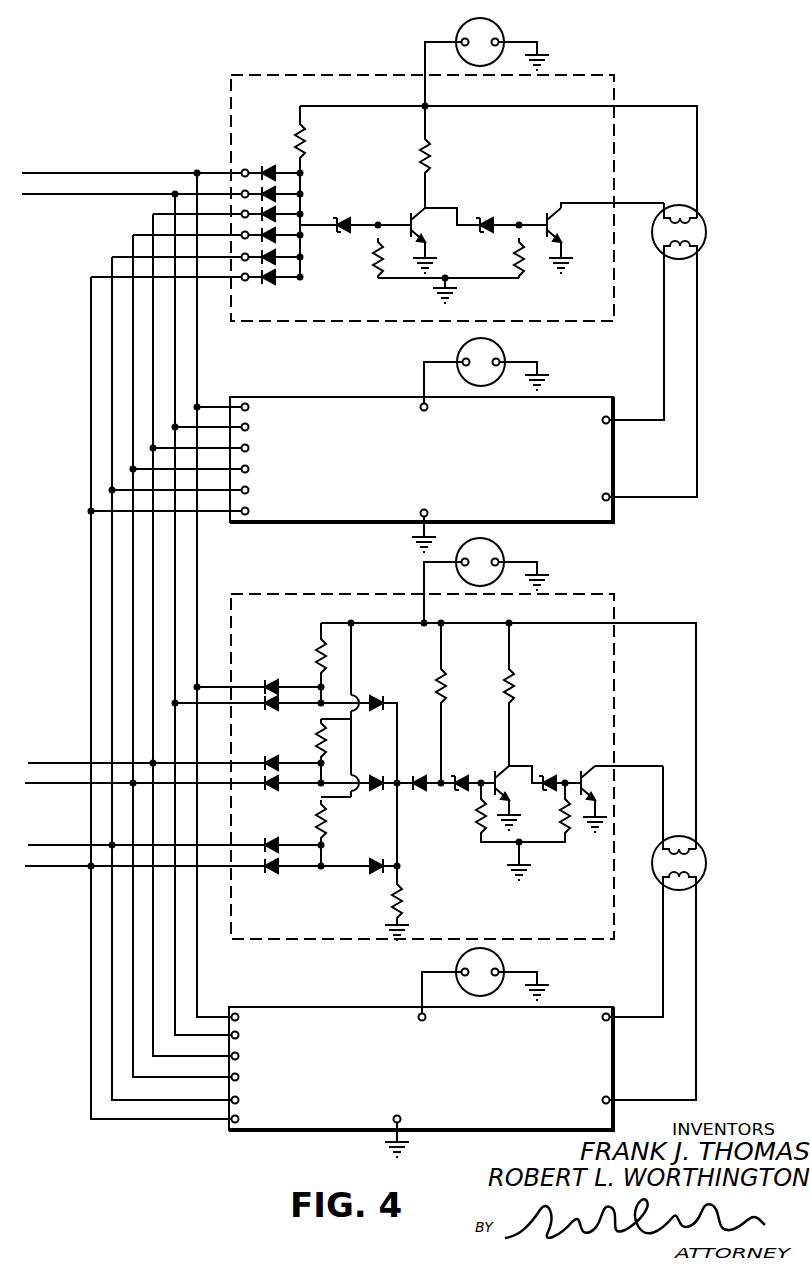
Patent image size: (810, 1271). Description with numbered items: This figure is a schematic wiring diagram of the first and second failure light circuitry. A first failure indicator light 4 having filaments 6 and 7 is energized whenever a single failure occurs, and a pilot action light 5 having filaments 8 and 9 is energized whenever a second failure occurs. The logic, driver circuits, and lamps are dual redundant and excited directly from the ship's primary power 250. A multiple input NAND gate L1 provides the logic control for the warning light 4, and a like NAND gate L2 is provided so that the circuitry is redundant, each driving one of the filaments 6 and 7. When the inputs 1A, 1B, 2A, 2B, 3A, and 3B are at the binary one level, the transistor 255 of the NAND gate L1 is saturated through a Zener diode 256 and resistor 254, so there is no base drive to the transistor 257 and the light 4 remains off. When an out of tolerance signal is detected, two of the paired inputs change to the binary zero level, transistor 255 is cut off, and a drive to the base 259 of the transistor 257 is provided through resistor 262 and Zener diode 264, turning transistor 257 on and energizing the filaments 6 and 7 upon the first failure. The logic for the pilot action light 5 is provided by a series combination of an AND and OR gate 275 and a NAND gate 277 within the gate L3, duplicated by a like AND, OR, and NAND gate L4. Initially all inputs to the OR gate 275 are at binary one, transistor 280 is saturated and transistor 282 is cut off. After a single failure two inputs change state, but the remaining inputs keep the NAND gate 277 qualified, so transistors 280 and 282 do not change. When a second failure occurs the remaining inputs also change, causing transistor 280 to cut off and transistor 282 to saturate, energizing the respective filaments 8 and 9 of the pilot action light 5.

The primary power 250 is at (505, 40).
The resistor 254 is at (306, 145).
The resistor 262 is at (432, 162).
The Zener diode 256 is at (346, 214).
The Zener diode 264 is at (486, 215).
The transistor 255 is at (424, 234).
The transistor 257 is at (559, 232).
The base 259 is at (544, 217).
The filament 6 is at (676, 212).
The filament 7 is at (678, 258).
The first failure indicator light 4 is at (678, 335).
The AND and OR gate 275 is at (272, 678).
The NAND gate 277 is at (528, 752).
The transistor 280 is at (504, 801).
The transistor 282 is at (592, 789).
The filament 8 is at (677, 840).
The filament 9 is at (678, 890).
The pilot action light 5 is at (677, 933).
The input 1A is at (36, 168).
The input 1B is at (60, 197).
The input 2A is at (45, 760).
The input 2B is at (65, 785).
The input 3A is at (40, 843).
The input 3B is at (60, 868).
The NAND gate L1 is at (283, 72).
The NAND gate L2 is at (283, 394).
The AND, OR, and NAND gate L3 is at (283, 591).
The AND, OR, and NAND gate L4 is at (283, 1004).